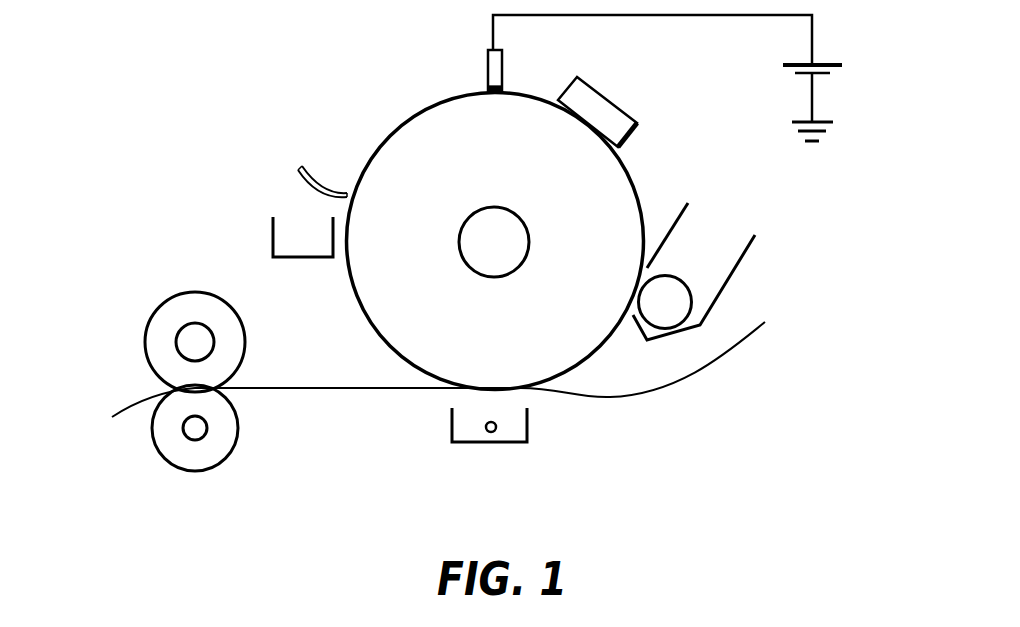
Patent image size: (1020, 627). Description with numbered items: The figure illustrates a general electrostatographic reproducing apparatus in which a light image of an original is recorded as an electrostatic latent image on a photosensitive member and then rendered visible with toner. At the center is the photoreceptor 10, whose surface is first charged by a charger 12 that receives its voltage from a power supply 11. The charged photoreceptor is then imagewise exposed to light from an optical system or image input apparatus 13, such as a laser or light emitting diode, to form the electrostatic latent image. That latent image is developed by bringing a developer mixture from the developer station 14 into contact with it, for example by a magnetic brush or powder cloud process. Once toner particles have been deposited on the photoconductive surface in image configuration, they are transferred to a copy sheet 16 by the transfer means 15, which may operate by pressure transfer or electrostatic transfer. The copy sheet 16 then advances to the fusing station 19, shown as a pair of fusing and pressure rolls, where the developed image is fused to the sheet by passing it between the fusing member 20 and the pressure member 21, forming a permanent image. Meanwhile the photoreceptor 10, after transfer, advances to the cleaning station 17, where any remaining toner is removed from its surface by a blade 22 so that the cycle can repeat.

The photoreceptor 10 is at (635, 185).
The power supply 11 is at (812, 42).
The charger 12 is at (498, 73).
The image input apparatus 13 is at (613, 112).
The developer station 14 is at (698, 250).
The transfer means 15 is at (528, 438).
The copy sheet 16 is at (720, 355).
The cleaning station 17 is at (288, 192).
The fusing station 19 is at (130, 348).
The fusing member 20 is at (235, 328).
The pressure member 21 is at (230, 437).
The blade 22 is at (318, 182).